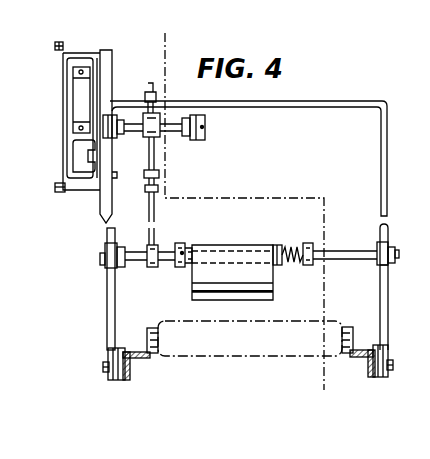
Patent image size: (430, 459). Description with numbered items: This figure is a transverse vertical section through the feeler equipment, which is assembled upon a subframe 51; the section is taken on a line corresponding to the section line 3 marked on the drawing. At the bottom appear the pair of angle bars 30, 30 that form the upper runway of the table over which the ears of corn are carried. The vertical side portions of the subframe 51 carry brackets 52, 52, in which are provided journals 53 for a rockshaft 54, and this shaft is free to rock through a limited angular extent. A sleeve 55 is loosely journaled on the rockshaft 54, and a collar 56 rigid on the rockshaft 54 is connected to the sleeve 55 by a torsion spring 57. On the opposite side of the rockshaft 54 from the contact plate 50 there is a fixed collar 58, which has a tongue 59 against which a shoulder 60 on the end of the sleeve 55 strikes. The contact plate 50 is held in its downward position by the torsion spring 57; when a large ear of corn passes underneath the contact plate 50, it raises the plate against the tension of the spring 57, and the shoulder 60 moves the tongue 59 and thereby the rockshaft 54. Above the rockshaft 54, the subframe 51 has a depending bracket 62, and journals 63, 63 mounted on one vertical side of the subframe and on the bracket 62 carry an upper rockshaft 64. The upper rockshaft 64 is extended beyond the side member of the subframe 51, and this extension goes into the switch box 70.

The section line 3- 3 is at (147, 48).
The angle bars 30 is at (141, 358).
The contact plate 50 is at (258, 280).
The subframe 51 is at (386, 193).
The brackets 52 is at (103, 251).
The journals 53 is at (105, 266).
The rockshaft 54 is at (320, 253).
The sleeve 55 is at (285, 248).
The collar 56 is at (312, 243).
The torsion spring 57 is at (294, 261).
The fixed collar 58 is at (177, 267).
The tongue 59 is at (180, 247).
The shoulder 60 is at (192, 271).
The depending bracket 62 is at (207, 126).
The journals 63 is at (112, 117).
The upper rockshaft 64 is at (172, 129).
The switch box 70 is at (77, 51).